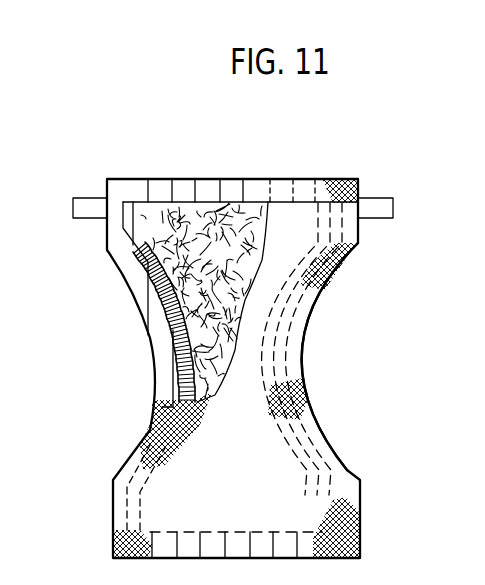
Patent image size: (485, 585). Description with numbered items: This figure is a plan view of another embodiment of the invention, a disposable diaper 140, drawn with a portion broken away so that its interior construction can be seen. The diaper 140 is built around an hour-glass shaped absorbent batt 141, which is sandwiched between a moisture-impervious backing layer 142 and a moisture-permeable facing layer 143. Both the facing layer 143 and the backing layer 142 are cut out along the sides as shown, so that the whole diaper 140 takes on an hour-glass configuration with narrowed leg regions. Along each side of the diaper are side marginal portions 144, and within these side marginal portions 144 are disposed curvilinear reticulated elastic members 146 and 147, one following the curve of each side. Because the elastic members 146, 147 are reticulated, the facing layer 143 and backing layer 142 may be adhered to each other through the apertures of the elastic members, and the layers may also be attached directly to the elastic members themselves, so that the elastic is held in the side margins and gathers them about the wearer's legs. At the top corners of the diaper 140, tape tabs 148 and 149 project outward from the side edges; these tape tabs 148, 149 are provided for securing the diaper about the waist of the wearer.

The disposable diaper 140 is at (137, 322).
The absorbent batt 141 is at (195, 212).
The moisture-impervious backing layer 142 is at (125, 228).
The moisture-permeable facing layer 143 is at (282, 222).
The side marginal portions 144 is at (173, 368).
The curvilinear reticulated elastic member 146 is at (146, 263).
The curvilinear reticulated elastic member 147 is at (288, 318).
The tape tab 148 is at (85, 206).
The tape tab 149 is at (375, 200).